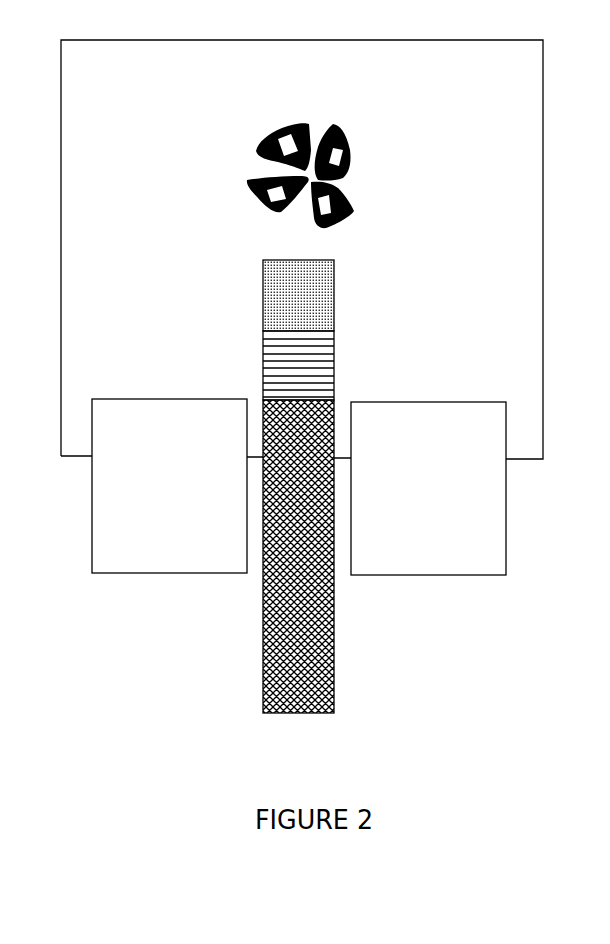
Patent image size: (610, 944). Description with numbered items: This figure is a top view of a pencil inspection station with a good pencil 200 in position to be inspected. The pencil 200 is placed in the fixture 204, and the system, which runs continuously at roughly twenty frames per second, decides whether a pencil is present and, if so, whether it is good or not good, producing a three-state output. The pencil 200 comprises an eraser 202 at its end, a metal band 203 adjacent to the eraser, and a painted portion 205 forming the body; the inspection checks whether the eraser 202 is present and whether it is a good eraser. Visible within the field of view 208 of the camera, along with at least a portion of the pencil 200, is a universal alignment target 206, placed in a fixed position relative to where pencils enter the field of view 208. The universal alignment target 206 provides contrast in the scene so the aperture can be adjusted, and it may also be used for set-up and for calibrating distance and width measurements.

The pencil 200 is at (335, 697).
The eraser 202 is at (335, 289).
The metal band 203 is at (335, 358).
The fixture 204 is at (506, 538).
The painted portion 205 is at (263, 665).
The universal alignment target 206 is at (293, 123).
The field of view 208 is at (543, 311).